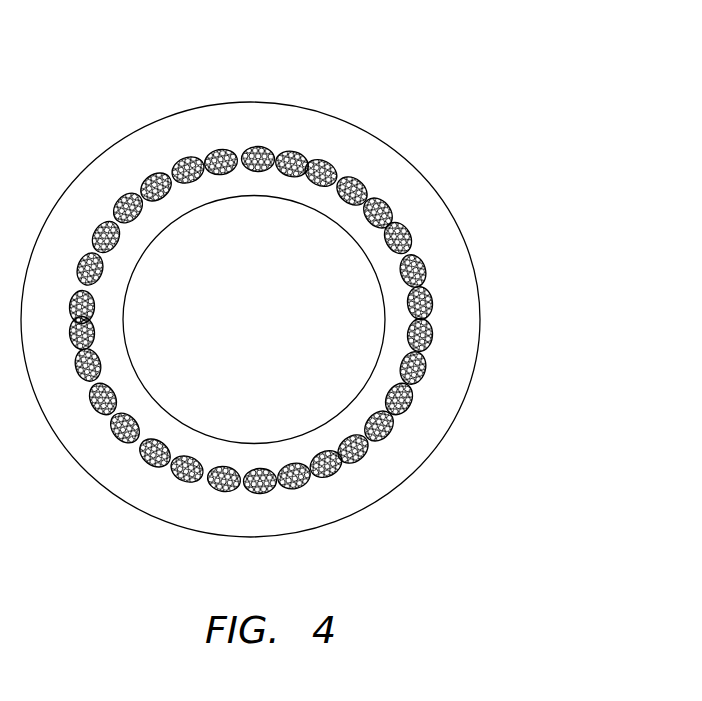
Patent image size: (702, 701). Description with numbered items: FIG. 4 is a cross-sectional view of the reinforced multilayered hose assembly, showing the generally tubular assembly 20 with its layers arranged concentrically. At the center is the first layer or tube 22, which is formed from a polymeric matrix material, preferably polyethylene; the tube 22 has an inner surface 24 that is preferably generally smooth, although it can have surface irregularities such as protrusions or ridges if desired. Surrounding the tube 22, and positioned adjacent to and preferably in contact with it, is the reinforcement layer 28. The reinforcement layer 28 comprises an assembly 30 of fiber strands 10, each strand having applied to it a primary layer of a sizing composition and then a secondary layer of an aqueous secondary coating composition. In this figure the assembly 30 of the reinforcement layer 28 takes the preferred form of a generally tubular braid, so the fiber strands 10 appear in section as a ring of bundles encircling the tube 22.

The fiber strands 10 is at (293, 279).
The generally tubular assembly 20 is at (403, 482).
The first layer or tube 22 is at (363, 252).
The inner surface 24 is at (173, 225).
The reinforcement layer 28 is at (367, 183).
The assembly of fiber strands 30 is at (278, 157).